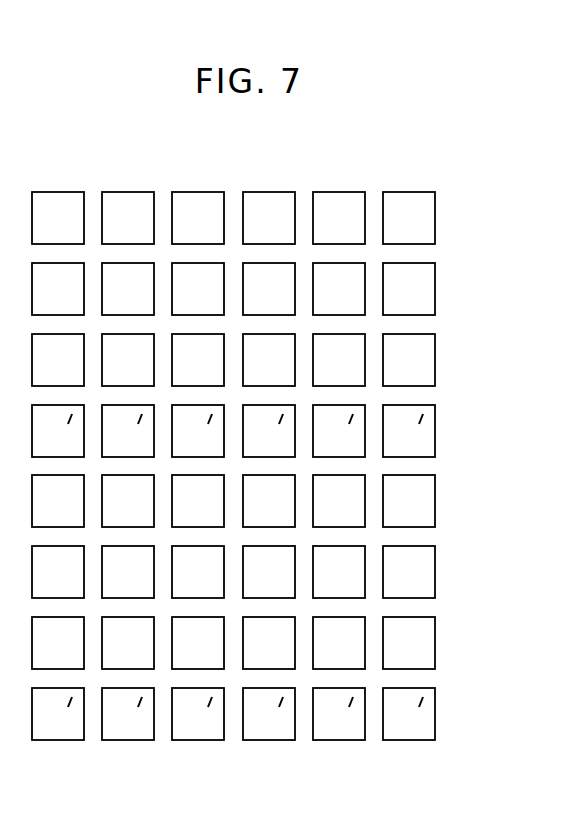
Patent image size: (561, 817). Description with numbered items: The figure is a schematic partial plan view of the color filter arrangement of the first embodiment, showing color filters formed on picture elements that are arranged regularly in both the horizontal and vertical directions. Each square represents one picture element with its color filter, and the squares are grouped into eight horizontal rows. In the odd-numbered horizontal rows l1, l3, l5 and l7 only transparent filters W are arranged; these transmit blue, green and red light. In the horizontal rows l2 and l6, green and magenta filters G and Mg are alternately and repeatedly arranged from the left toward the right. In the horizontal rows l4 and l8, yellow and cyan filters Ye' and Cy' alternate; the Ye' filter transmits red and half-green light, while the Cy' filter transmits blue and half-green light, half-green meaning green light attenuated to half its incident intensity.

The horizontal row l1 is at (274, 218).
The horizontal row l2 is at (274, 289).
The horizontal row l3 is at (274, 360).
The horizontal row l4 is at (274, 431).
The horizontal row l5 is at (274, 501).
The horizontal row l6 is at (274, 572).
The horizontal row l7 is at (274, 643).
The horizontal row l8 is at (274, 714).